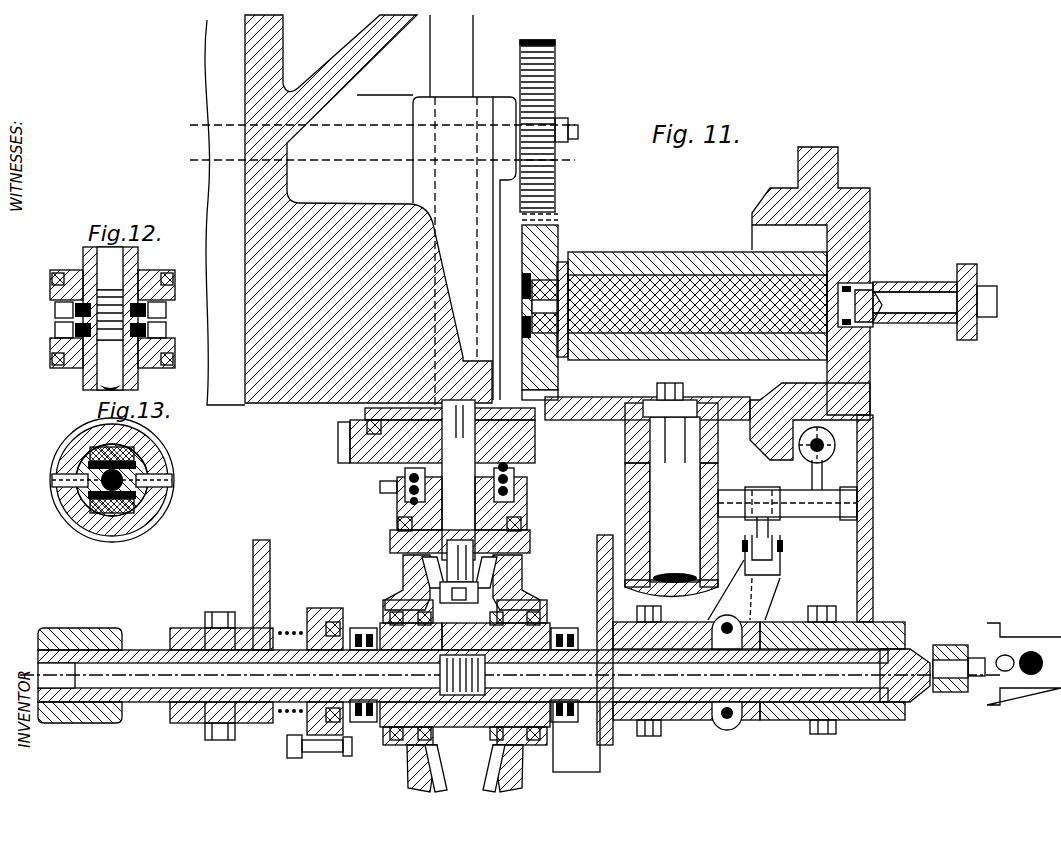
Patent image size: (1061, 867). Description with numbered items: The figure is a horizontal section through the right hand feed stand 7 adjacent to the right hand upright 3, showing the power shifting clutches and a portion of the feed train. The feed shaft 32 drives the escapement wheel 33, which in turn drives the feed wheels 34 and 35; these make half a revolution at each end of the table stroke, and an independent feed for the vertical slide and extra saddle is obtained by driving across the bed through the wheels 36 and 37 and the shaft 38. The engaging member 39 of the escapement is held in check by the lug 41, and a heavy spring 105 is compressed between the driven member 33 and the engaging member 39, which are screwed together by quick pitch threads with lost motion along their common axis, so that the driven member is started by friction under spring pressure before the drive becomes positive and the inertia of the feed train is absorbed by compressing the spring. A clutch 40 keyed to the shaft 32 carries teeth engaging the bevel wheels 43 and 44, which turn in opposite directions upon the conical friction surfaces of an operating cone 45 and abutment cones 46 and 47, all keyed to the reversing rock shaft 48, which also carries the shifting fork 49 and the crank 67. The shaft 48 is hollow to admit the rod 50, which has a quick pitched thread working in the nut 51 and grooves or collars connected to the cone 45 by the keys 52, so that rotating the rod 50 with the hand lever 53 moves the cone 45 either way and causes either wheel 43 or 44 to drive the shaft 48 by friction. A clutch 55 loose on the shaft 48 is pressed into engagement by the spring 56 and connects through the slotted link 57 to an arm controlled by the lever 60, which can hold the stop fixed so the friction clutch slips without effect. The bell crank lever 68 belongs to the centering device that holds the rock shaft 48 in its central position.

In FIG. 11, the right hand upright 3 is at (368, 209).
In FIG. 11, the right hand feed stand 7 is at (865, 542).
In FIG. 11, the feed shaft 32 is at (382, 212).
In FIG. 11, the escapement wheel 33 is at (338, 443).
In FIG. 11, the feed wheel 34 is at (658, 490).
In FIG. 11, the feed wheel 35 is at (792, 404).
In FIG. 11, the wheel 36 is at (558, 235).
In FIG. 11, the wheel 37 is at (555, 195).
In FIG. 11, the shaft 38 is at (223, 212).
In FIG. 11, the engaging member of the escapement 39 is at (520, 490).
In FIG. 11, the clutch 40 is at (530, 540).
In FIG. 11, the lug 41 is at (380, 487).
In FIG. 11, the bevel wheel 43 is at (522, 581).
In FIG. 11, the bevel wheel 44 is at (403, 583).
In FIG. 12, the operating cone 45 is at (153, 365).
In FIG. 13, the operating cone 45 is at (88, 534).
In FIG. 11, the abutment cone 46 is at (548, 614).
In FIG. 11, the abutment cone 47 is at (380, 618).
In FIG. 11, the reversing rock shaft 48 is at (201, 676).
In FIG. 11, the shifting fork 49 is at (80, 675).
In FIG. 11, the rod 50 is at (875, 668).
In FIG. 11, the nut 51 is at (905, 622).
In FIG. 11, the key 52 is at (540, 606).
In FIG. 12, the key 52 is at (76, 272).
In FIG. 13, the key 52 is at (76, 444).
In FIG. 11, the hand lever 53 is at (945, 684).
In FIG. 11, the clutch 55 is at (307, 616).
In FIG. 11, the spring 56 is at (305, 710).
In FIG. 11, the slotted link 57 is at (293, 758).
In FIG. 11, the lever 60 is at (1024, 664).
In FIG. 11, the crank 67 is at (727, 672).
In FIG. 11, the bell crank lever 68 is at (787, 473).
In FIG. 11, the spring 105 is at (510, 468).